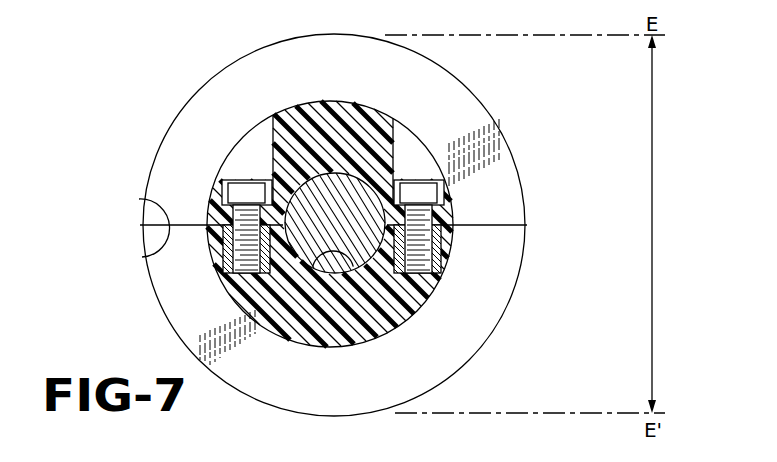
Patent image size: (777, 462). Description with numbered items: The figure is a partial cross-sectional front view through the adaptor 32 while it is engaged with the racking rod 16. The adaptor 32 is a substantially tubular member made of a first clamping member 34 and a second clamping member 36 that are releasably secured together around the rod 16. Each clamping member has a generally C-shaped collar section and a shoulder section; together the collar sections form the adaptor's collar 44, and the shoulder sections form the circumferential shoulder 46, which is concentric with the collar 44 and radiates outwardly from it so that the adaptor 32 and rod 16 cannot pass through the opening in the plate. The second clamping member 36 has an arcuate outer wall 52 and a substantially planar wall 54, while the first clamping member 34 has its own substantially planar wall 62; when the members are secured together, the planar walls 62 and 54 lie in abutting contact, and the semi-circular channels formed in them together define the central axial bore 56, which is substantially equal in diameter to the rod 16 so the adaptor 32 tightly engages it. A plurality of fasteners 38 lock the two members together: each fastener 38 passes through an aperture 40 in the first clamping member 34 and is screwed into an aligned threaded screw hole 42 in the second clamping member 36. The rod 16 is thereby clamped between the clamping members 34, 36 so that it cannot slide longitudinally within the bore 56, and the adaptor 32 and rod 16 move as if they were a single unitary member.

The racking rod 16 is at (342, 190).
The adaptor 32 is at (150, 120).
The first clamping member 34 is at (488, 100).
The second clamping member 36 is at (494, 334).
The fasteners 38 is at (225, 190).
The apertures 40 is at (249, 148).
The threaded screw holes 42 is at (244, 270).
The collar 44 is at (277, 340).
The shoulder 46 is at (459, 360).
The arcuate outer wall 52 is at (304, 103).
The planar wall 54 is at (140, 198).
The axial bore 56 is at (355, 260).
The planar wall 62 is at (142, 257).